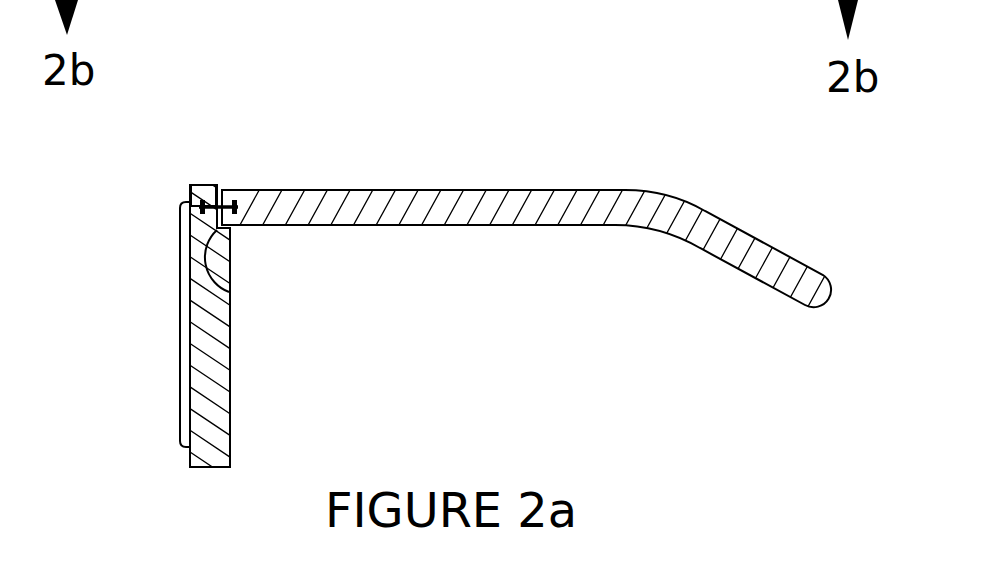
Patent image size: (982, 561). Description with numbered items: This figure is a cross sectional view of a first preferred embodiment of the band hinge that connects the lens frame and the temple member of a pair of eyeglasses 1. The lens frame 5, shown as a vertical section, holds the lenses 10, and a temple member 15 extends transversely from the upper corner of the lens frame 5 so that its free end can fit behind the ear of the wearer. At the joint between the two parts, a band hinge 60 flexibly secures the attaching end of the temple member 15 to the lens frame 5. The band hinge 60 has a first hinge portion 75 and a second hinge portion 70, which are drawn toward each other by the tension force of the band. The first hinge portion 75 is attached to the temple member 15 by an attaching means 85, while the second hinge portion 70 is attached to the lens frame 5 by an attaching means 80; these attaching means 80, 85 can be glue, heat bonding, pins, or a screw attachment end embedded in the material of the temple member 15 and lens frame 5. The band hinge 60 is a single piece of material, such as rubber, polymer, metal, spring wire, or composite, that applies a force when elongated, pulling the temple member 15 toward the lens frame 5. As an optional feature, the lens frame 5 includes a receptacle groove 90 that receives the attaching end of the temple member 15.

The eyeglasses 1 is at (467, 300).
The lens frame 5 is at (232, 333).
The lenses 10 is at (179, 372).
The temple member 15 is at (603, 208).
The band hinge 60 is at (223, 203).
The second hinge portion 70 is at (206, 205).
The first hinge portion 75 is at (233, 200).
The attaching means 80 is at (203, 186).
The attaching means 85 is at (238, 205).
The receptacle groove 90 is at (229, 292).